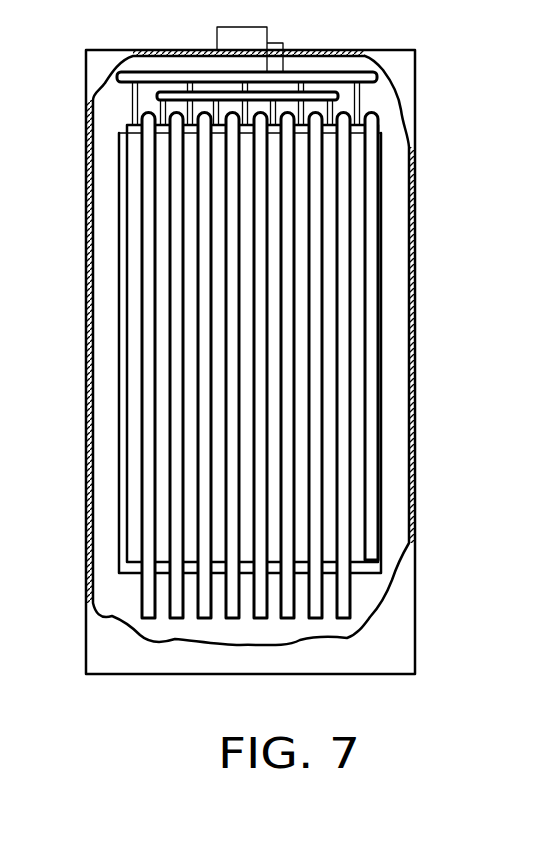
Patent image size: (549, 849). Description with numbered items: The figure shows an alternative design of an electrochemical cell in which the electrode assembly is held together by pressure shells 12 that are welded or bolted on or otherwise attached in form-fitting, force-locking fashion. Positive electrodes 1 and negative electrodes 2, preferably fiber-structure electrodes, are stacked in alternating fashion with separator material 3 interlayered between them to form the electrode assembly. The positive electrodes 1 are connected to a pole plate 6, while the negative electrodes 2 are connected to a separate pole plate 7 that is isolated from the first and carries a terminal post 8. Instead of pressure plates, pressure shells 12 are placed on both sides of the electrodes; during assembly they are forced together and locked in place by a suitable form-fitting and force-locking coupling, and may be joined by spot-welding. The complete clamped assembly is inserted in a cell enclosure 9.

The positive electrodes 1 is at (162, 560).
The negative electrodes 2 is at (133, 565).
The separator material 3 is at (149, 620).
The pole plate 6 is at (339, 96).
The pole plate 7 is at (377, 79).
The terminal post 8 is at (251, 27).
The cell enclosure 9 is at (417, 578).
The pressure shells 12 is at (383, 310).